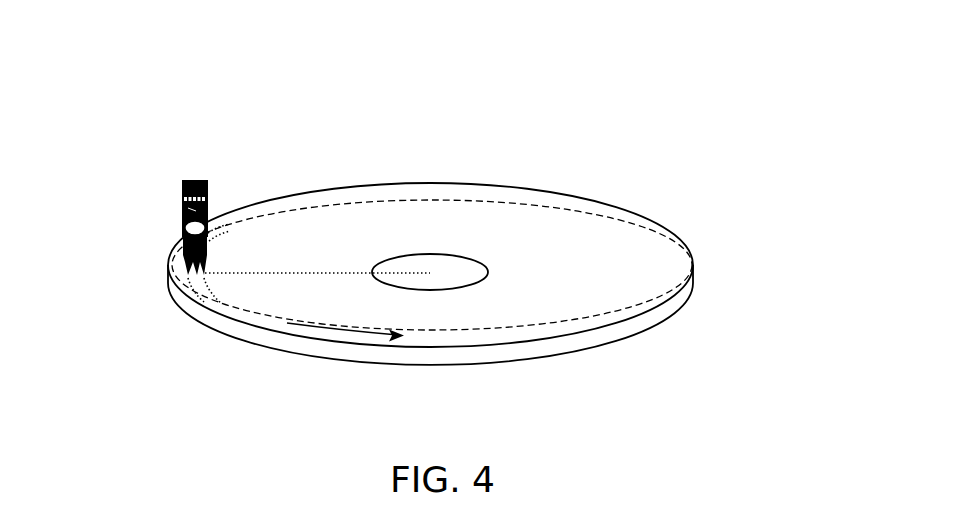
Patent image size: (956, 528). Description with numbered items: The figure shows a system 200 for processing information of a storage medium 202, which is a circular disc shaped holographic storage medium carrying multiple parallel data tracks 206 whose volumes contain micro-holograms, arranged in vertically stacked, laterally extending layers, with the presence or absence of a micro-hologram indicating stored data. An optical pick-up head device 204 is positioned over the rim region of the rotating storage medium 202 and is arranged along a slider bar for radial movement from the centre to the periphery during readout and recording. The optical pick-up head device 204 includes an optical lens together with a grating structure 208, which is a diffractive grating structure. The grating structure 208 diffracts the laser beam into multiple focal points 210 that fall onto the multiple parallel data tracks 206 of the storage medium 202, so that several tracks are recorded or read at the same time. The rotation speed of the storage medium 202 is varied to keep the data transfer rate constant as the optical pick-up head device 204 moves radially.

The system 200 is at (684, 80).
The storage medium 202 is at (170, 290).
The optical pick-up head device 204 is at (185, 233).
The parallel data tracks 206 is at (236, 238).
The grating structure 208 is at (212, 198).
The multiple focal points 210 is at (187, 273).